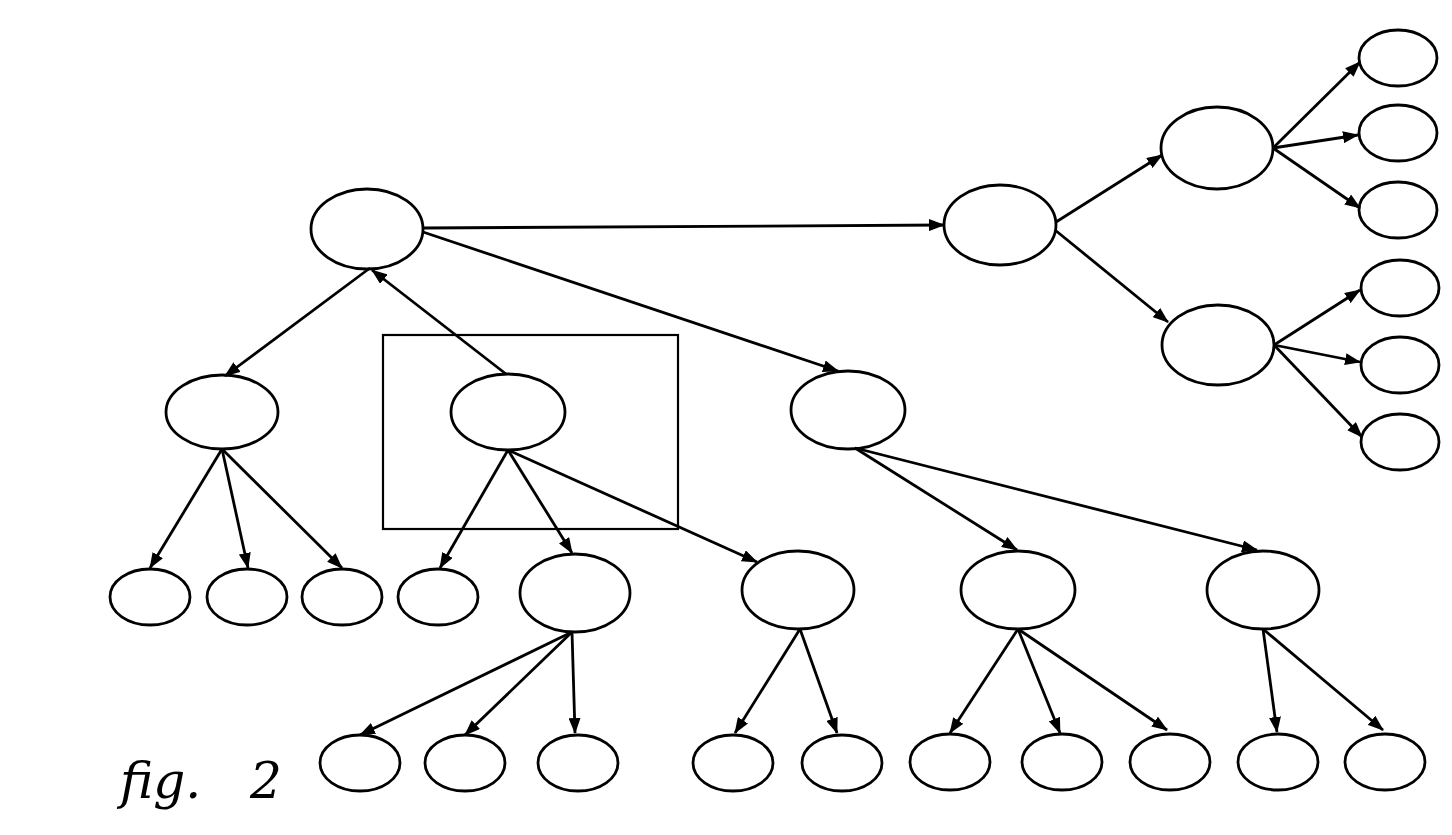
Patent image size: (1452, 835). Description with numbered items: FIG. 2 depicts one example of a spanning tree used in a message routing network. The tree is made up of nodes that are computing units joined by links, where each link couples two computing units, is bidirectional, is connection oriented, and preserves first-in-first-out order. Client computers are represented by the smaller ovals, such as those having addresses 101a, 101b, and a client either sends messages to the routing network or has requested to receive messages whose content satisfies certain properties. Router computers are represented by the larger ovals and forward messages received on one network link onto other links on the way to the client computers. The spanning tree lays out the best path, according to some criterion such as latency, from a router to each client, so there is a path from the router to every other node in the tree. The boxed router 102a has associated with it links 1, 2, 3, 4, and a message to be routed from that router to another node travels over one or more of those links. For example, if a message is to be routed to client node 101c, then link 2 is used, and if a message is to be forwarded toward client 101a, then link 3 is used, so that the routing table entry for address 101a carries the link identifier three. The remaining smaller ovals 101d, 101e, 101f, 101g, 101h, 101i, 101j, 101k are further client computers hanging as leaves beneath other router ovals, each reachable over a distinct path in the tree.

The node 102a of the tree 102a is at (542, 426).
The client computer address 101a is at (605, 776).
The client computer address 101b is at (760, 776).
The client computer node 101c is at (465, 610).
The leaf node 101d is at (977, 775).
The leaf node 101e is at (869, 776).
The leaf node 101f is at (1089, 775).
The leaf node 101g is at (1197, 775).
The leaf node 101h is at (1305, 775).
The leaf node 101i is at (1411, 775).
The leaf node 101j is at (1426, 378).
The leaf node 101k is at (1427, 455).
The link 1 is at (439, 326).
The link 2 is at (474, 509).
The link 3 is at (538, 501).
The link 4 is at (632, 506).